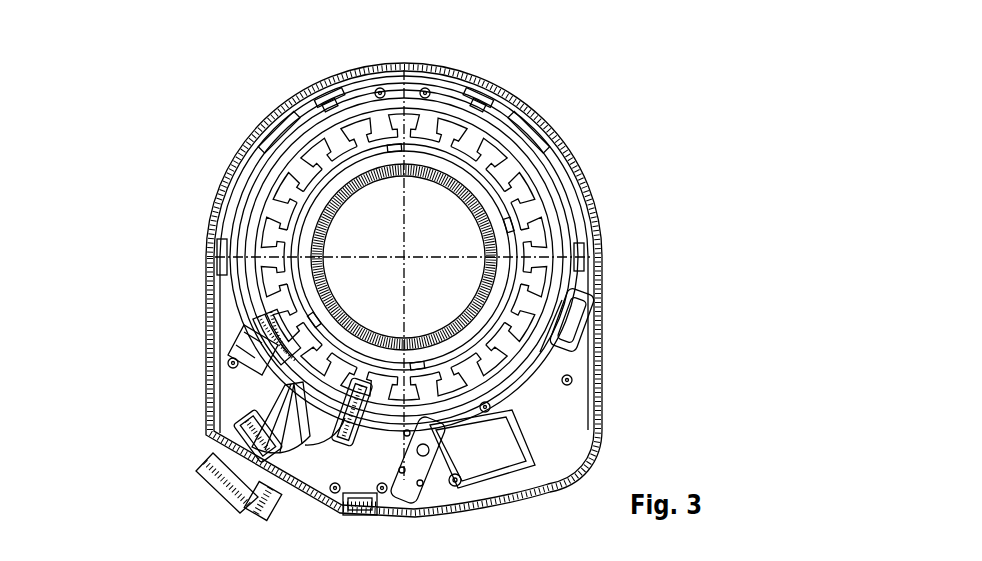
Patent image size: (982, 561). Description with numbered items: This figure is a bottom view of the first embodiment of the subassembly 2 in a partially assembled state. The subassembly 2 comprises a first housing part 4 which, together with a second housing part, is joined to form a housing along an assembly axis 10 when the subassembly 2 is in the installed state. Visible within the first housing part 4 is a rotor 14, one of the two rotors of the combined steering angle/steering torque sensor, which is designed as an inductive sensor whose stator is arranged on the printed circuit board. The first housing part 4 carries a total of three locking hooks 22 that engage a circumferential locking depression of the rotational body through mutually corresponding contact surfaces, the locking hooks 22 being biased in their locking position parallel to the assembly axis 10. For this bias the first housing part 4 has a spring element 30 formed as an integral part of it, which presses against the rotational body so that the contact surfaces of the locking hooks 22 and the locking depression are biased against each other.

The subassembly 2 is at (584, 88).
The first housing part 4 is at (580, 177).
The assembly axis 10 is at (404, 257).
The rotor 14 is at (505, 170).
The locking hook 22 is at (257, 347).
The spring element 30 is at (300, 392).